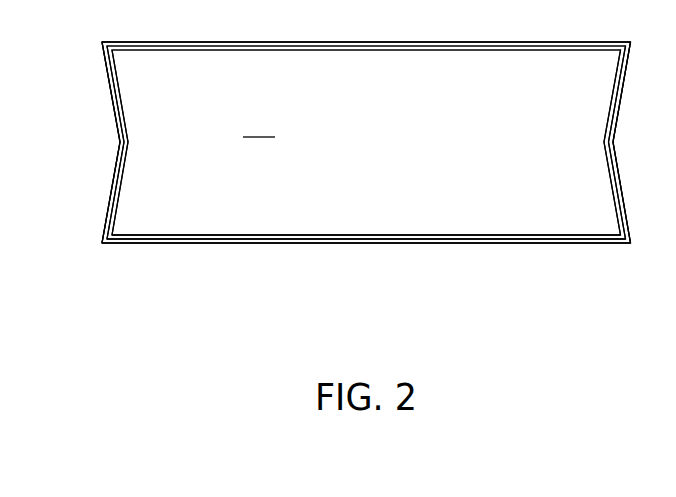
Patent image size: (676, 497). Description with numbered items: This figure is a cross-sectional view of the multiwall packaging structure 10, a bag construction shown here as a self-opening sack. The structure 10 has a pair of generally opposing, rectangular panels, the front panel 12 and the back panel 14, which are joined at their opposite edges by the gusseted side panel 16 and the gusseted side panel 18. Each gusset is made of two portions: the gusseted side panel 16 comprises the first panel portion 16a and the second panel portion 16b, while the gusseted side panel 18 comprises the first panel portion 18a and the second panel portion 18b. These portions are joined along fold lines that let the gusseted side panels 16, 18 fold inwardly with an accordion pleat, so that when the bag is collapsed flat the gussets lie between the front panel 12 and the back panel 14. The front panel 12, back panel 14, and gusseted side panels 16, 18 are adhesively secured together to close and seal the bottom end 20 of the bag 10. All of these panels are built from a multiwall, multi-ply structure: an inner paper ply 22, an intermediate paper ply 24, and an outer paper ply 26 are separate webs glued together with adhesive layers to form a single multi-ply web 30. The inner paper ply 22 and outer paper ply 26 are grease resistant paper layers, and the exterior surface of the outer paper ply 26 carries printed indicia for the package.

The multiwall packaging structure 10 is at (475, 272).
The front panel 12 is at (320, 239).
The back panel 14 is at (327, 50).
The gusseted side panel 16 is at (116, 118).
The first panel portion 16a is at (118, 213).
The second panel portion 16b is at (110, 83).
The gusseted side panel 18 is at (620, 63).
The first panel portion 18a is at (608, 100).
The second panel portion 18b is at (615, 208).
The bottom end 20 is at (259, 124).
The inner paper ply 22 is at (155, 245).
The intermediate paper ply 24 is at (227, 239).
The outer paper ply 26 is at (252, 235).
The multi-ply web 30 is at (252, 26).